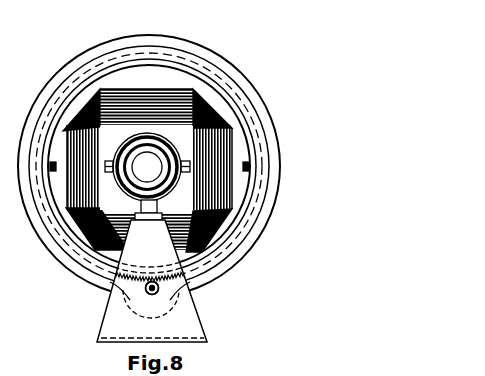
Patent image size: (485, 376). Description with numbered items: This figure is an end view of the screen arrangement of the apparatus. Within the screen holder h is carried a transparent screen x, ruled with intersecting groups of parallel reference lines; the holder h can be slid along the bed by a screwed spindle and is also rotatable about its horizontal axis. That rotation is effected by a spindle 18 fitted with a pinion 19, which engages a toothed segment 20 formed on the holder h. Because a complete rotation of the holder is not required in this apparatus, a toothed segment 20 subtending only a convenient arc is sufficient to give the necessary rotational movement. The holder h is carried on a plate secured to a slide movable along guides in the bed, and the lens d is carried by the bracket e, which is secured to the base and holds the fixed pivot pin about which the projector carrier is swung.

The lens d is at (146, 168).
The transparent screen x is at (226, 128).
The screen holder h is at (248, 138).
The toothed segment 20 is at (218, 262).
The bracket e is at (105, 318).
The spindle 18 is at (146, 293).
The pinion 19 is at (158, 293).